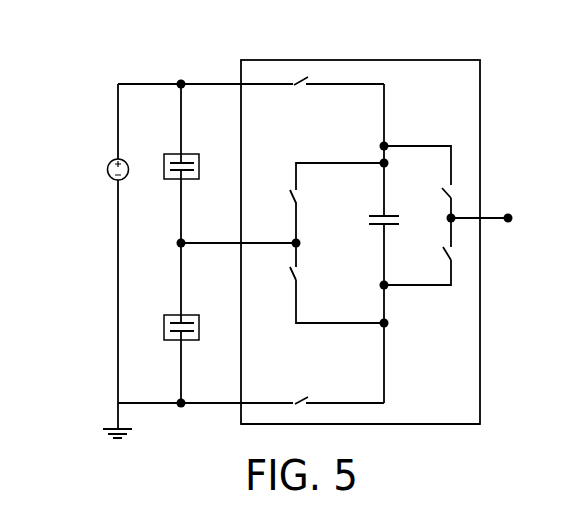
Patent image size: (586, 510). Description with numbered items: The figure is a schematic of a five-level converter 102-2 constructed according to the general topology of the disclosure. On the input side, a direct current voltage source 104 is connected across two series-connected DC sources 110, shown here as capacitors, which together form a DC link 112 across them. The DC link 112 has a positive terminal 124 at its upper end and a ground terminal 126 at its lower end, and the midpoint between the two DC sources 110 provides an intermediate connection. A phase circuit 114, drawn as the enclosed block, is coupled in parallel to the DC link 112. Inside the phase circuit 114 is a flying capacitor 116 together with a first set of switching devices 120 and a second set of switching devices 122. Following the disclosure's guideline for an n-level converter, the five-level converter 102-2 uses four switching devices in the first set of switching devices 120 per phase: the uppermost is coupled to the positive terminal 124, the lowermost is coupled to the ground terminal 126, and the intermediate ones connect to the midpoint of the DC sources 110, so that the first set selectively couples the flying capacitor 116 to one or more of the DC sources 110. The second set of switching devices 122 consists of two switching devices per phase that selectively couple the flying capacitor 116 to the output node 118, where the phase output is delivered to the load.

The five-level converter 102-2 is at (376, 33).
The direct current voltage source 104 is at (124, 178).
The DC sources 110 is at (199, 243).
The DC link 112 is at (110, 111).
The phase circuit 114 is at (428, 60).
The flying capacitor 116 is at (402, 233).
The output node 118 is at (511, 215).
The first set of switching devices 120 is at (283, 240).
The second set of switching devices 122 is at (420, 215).
The positive terminal 124 is at (181, 83).
The ground terminal 126 is at (182, 407).